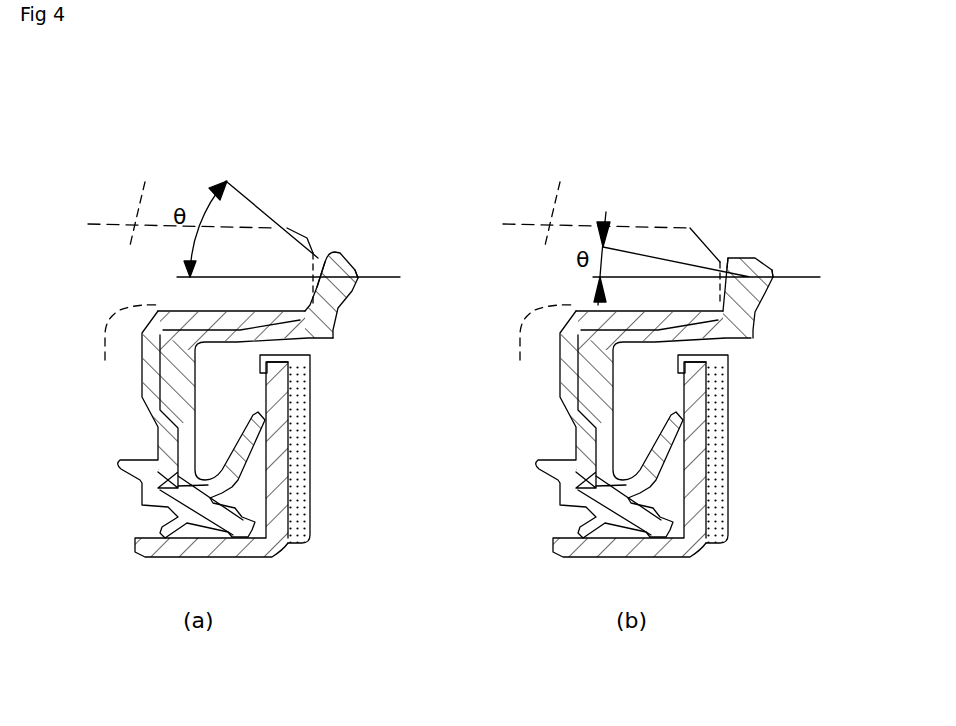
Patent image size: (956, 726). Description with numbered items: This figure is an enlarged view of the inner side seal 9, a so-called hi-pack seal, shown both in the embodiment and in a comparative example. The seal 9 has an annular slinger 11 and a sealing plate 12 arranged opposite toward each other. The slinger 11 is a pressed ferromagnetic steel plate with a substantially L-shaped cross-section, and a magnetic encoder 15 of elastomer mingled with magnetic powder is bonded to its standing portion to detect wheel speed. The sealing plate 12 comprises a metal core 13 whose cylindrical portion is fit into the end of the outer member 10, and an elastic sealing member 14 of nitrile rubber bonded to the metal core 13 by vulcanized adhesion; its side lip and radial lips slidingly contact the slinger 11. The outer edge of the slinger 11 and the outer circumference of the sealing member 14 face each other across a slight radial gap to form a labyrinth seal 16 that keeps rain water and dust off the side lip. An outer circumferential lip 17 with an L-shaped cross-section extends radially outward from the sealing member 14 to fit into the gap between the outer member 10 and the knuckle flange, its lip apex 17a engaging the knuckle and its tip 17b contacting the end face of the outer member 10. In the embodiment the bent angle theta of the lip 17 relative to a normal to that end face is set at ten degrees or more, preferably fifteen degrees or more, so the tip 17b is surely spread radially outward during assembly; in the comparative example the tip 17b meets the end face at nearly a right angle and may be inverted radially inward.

The inner side seal 9 is at (822, 510).
The outer member 10 is at (389, 257).
The slinger 11 is at (789, 542).
The sealing plate 12 is at (58, 367).
The metal core 13 is at (559, 352).
The sealing member 14 is at (535, 465).
The magnetic encoder 15 is at (792, 422).
The labyrinth seal 16 is at (787, 378).
The outer circumferential lip 17 is at (345, 259).
The lip apex 17a is at (774, 272).
The tip of the outer circumferential lip 17b is at (731, 257).